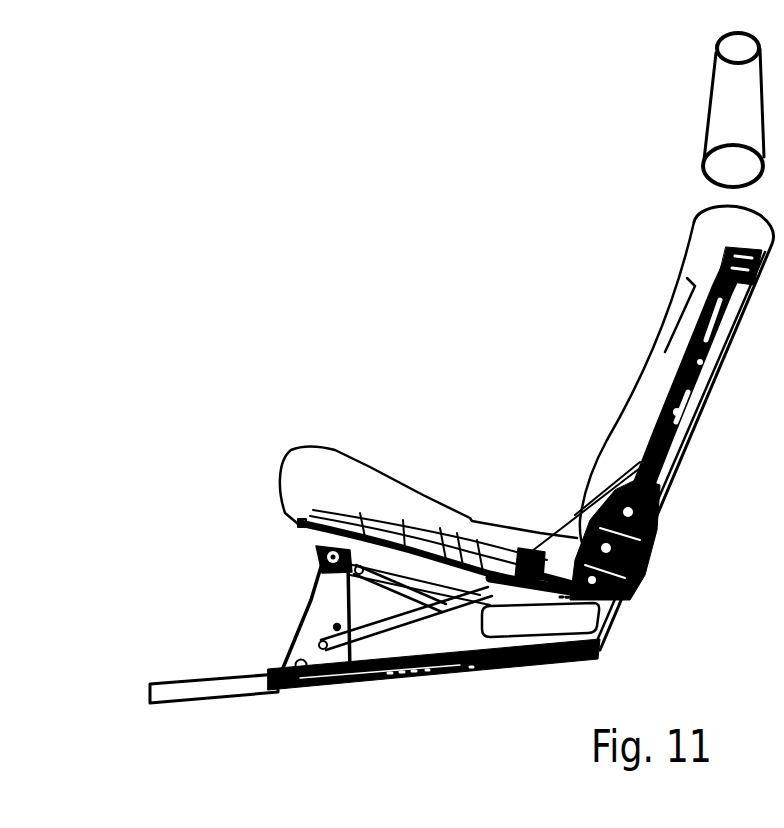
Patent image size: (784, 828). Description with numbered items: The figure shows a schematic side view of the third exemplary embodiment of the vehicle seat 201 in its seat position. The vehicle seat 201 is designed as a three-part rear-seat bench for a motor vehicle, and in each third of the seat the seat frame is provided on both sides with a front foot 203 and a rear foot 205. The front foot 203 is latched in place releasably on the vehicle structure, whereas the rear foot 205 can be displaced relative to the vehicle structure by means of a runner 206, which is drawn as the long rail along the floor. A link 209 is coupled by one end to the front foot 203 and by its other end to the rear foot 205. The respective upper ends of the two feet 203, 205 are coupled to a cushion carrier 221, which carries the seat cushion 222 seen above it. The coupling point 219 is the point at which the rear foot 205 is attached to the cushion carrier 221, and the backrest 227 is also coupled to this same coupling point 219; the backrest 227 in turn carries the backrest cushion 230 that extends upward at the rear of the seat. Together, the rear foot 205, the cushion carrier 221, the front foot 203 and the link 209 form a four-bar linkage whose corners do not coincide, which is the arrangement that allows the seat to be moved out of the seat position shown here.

The vehicle seat 201 is at (447, 299).
The front foot 203 is at (325, 611).
The rear foot 205 is at (593, 632).
The runner 206 is at (502, 677).
The link 209 is at (380, 612).
The coupling point 219 is at (650, 518).
The cushion carrier 221 is at (308, 533).
The seat cushion 222 is at (365, 480).
The backrest 227 is at (689, 418).
The backrest cushion 230 is at (642, 398).